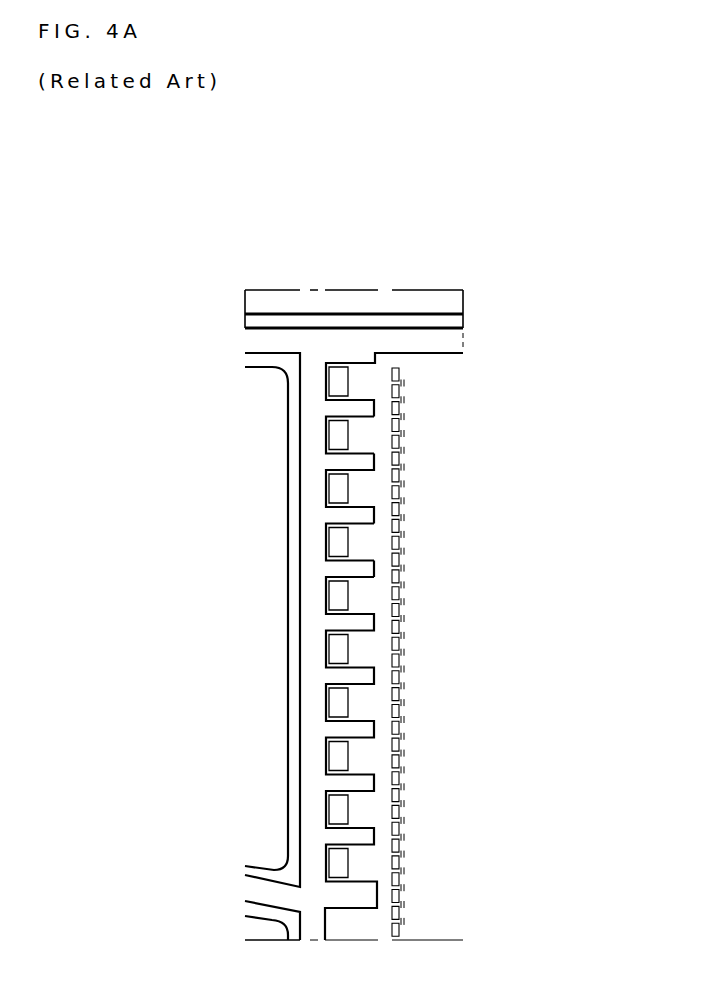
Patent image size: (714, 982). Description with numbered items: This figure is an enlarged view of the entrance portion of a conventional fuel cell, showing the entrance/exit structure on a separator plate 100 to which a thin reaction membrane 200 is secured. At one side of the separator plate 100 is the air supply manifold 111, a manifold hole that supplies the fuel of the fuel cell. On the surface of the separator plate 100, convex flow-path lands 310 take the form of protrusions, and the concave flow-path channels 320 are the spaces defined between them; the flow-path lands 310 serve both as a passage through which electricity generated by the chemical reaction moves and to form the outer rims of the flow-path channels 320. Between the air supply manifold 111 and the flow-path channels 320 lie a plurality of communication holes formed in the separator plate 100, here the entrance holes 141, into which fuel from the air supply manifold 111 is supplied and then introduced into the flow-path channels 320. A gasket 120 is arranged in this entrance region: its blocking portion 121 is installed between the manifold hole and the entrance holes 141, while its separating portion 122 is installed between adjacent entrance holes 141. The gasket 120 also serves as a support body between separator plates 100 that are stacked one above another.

The separator plate 100 is at (296, 271).
The air supply manifold 111 is at (267, 689).
The gasket 120 is at (264, 646).
The blocking portion 121 is at (312, 543).
The separating portion 122 is at (340, 569).
The entrance hole 141 is at (337, 494).
The reaction membrane 200 is at (363, 440).
The flow-path land 310 is at (450, 410).
The flow-path channel 320 is at (453, 376).